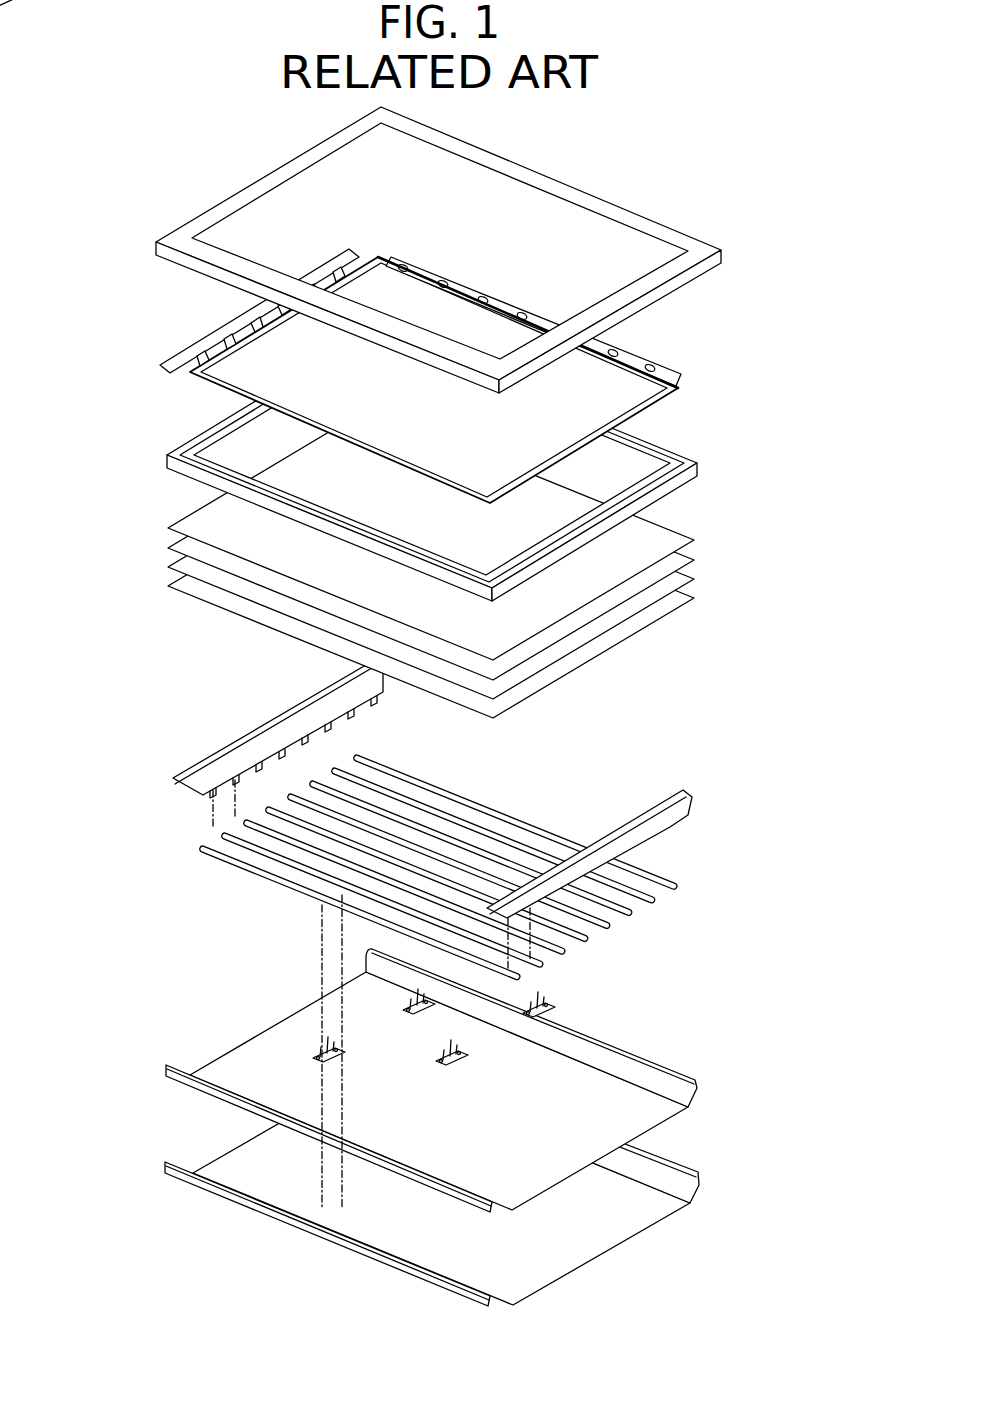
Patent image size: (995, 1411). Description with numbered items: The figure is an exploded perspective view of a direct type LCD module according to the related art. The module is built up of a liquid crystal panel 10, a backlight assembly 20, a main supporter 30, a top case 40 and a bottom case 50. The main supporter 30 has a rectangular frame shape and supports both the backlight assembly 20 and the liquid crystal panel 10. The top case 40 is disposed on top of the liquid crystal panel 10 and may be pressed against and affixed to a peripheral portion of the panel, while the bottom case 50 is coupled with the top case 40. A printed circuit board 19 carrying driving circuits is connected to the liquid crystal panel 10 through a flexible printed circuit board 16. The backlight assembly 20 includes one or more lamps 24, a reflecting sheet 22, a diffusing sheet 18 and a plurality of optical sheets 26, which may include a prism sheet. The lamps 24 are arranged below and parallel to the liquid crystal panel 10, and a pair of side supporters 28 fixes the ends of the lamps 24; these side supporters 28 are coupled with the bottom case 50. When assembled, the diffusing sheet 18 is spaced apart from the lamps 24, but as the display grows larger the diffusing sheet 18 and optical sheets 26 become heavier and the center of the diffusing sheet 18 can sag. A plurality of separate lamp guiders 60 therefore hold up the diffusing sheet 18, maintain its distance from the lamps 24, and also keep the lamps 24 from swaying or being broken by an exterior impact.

The liquid crystal panel 10 is at (499, 376).
The flexible printed circuit board 16 is at (680, 372).
The diffusing sheet 18 is at (668, 609).
The printed circuit board 19 is at (642, 352).
The backlight assembly 20 is at (414, 606).
The reflecting sheet 22 is at (633, 1105).
The lamp 24 is at (647, 868).
The optical sheets 26 is at (464, 553).
The side supporters 28 is at (607, 837).
The main supporter 30 is at (172, 465).
The top case 40 is at (182, 232).
The bottom case 50 is at (562, 1255).
The lamp guiders 60 is at (272, 1060).